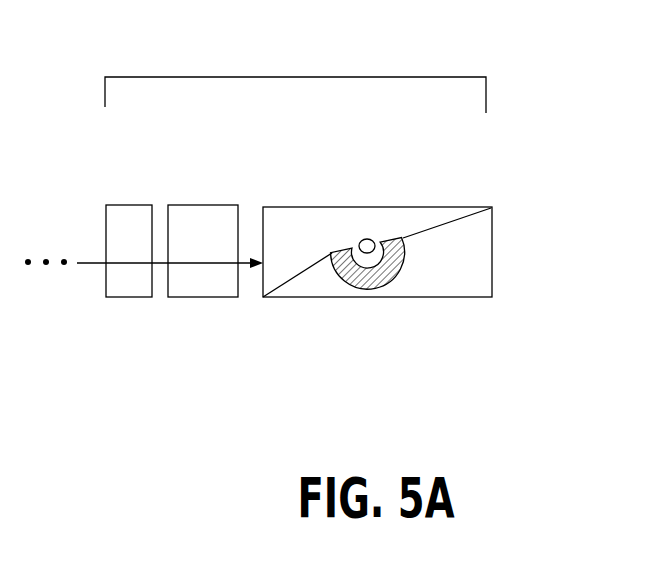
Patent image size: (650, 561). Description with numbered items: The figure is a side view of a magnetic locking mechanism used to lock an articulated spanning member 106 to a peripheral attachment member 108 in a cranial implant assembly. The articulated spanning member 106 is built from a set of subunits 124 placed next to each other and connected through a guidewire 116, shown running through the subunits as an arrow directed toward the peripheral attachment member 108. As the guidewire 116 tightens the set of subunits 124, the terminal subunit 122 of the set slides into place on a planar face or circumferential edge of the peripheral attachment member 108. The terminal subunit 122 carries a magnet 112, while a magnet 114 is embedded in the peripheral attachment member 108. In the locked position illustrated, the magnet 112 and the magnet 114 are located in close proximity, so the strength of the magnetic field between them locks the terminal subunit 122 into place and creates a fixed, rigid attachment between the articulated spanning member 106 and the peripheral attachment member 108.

The articulated spanning member 106 is at (272, 77).
The set of subunits 124 is at (128, 222).
The guidewire 116 is at (245, 268).
The peripheral attachment member 108 is at (475, 248).
The terminal subunit 122 is at (286, 232).
The magnet 114 is at (387, 298).
The magnet 112 is at (379, 230).